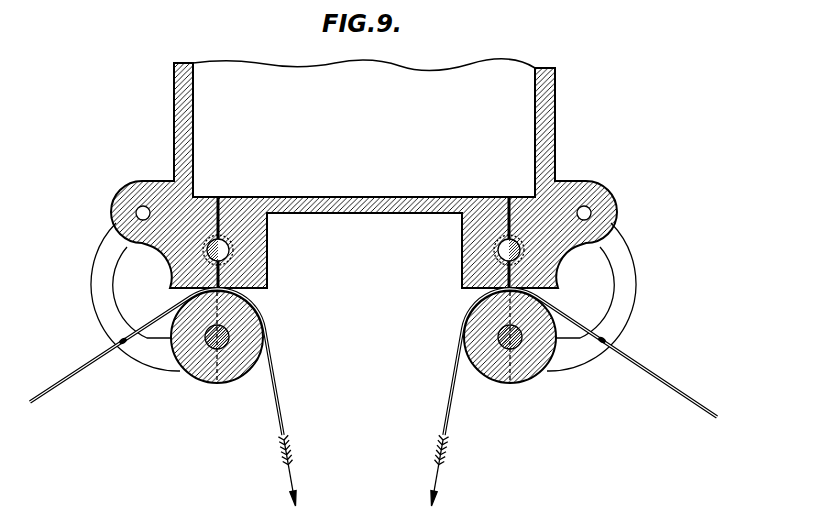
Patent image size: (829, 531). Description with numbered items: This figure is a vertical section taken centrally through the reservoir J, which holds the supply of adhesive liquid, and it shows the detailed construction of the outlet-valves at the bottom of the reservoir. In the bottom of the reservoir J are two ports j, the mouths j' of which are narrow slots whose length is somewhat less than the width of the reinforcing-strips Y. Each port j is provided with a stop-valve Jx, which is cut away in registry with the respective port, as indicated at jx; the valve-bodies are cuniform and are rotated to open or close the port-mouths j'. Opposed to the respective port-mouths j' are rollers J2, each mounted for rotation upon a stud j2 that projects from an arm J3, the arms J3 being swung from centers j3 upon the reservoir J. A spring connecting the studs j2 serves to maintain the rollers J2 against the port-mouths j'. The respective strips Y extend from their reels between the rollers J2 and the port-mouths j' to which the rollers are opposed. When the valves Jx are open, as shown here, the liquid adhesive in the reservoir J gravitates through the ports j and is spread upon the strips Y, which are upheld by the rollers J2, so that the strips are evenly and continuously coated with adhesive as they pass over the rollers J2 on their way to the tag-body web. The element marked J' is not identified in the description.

The reservoir J is at (364, 173).
The port j is at (360, 230).
The stop-valve Jx is at (497, 257).
The cut-away of stop-valve jx is at (498, 261).
The center j3 is at (626, 210).
The arm J3 is at (652, 305).
The port-mouth j' is at (360, 287).
The roller J2 is at (509, 385).
The stud j2 is at (498, 340).
The pulley axle J' is at (363, 337).
The reinforcing-strip Y is at (373, 397).